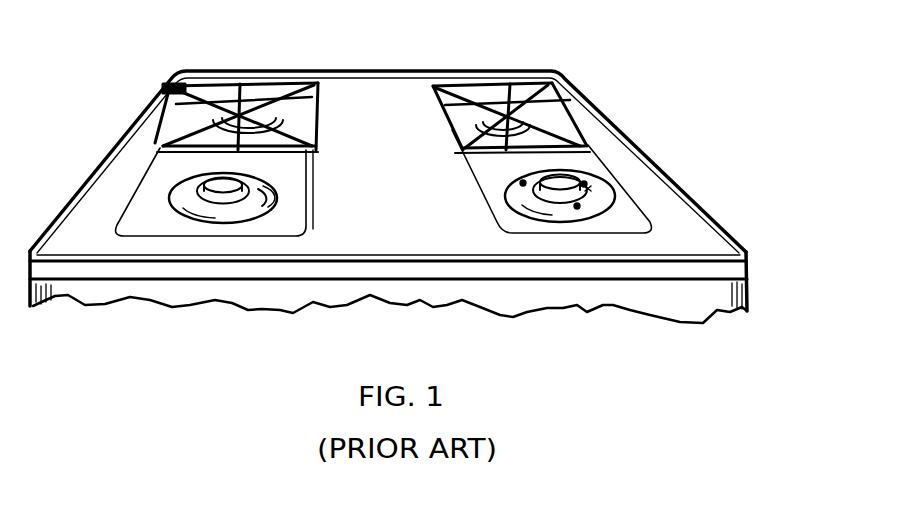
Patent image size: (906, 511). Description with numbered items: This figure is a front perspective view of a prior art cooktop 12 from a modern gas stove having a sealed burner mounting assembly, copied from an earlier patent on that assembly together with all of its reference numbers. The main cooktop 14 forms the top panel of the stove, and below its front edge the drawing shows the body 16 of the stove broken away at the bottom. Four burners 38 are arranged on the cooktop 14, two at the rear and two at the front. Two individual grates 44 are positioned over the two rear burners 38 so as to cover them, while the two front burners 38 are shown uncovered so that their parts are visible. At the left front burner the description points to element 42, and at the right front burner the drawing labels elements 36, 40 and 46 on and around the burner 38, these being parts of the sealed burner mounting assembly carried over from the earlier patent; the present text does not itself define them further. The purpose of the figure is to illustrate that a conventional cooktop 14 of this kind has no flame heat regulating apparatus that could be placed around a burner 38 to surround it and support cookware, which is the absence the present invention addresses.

The prior art cooktop 12 is at (727, 169).
The cooktop 14 is at (369, 103).
The body side wall 16 is at (653, 293).
The burner cap 36 is at (580, 204).
The burner 38 is at (263, 84).
The burner ports / igniter 40 is at (582, 184).
The burner bowl 42 is at (195, 192).
The grate 44 is at (218, 78).
The igniter electrode 46 is at (575, 176).